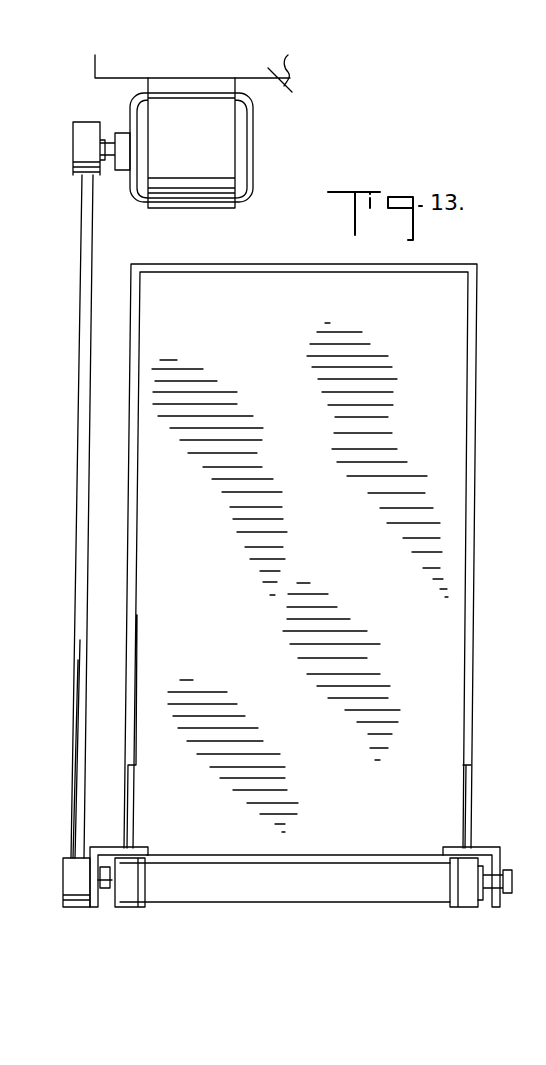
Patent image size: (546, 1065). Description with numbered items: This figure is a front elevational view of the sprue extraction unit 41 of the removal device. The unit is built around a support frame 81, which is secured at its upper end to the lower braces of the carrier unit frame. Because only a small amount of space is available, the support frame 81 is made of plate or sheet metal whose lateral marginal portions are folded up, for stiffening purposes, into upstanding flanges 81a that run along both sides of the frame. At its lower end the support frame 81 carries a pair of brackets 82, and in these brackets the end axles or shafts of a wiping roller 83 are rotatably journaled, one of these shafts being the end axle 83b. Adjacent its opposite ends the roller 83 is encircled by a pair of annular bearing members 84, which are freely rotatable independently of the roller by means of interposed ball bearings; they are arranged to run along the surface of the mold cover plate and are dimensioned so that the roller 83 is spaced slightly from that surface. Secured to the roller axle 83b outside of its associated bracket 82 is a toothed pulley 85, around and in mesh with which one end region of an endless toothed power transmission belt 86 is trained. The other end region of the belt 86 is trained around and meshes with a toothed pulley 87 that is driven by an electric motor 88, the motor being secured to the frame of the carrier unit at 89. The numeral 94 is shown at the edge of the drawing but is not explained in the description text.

The sprue extraction unit 41 is at (500, 429).
The support frame 81 is at (455, 302).
The upstanding flanges 81a is at (303, 268).
The brackets 82 is at (108, 845).
The wiping roller 83 is at (268, 898).
The end axle 83b is at (108, 892).
The annular bearing members 84 is at (150, 905).
The toothed pulley 85 is at (63, 890).
The endless toothed power transmission belt 86 is at (78, 597).
The toothed pulley 87 is at (73, 128).
The electric motor 88 is at (223, 151).
The motor securing location 89 is at (211, 84).
The support 94 is at (536, 952).